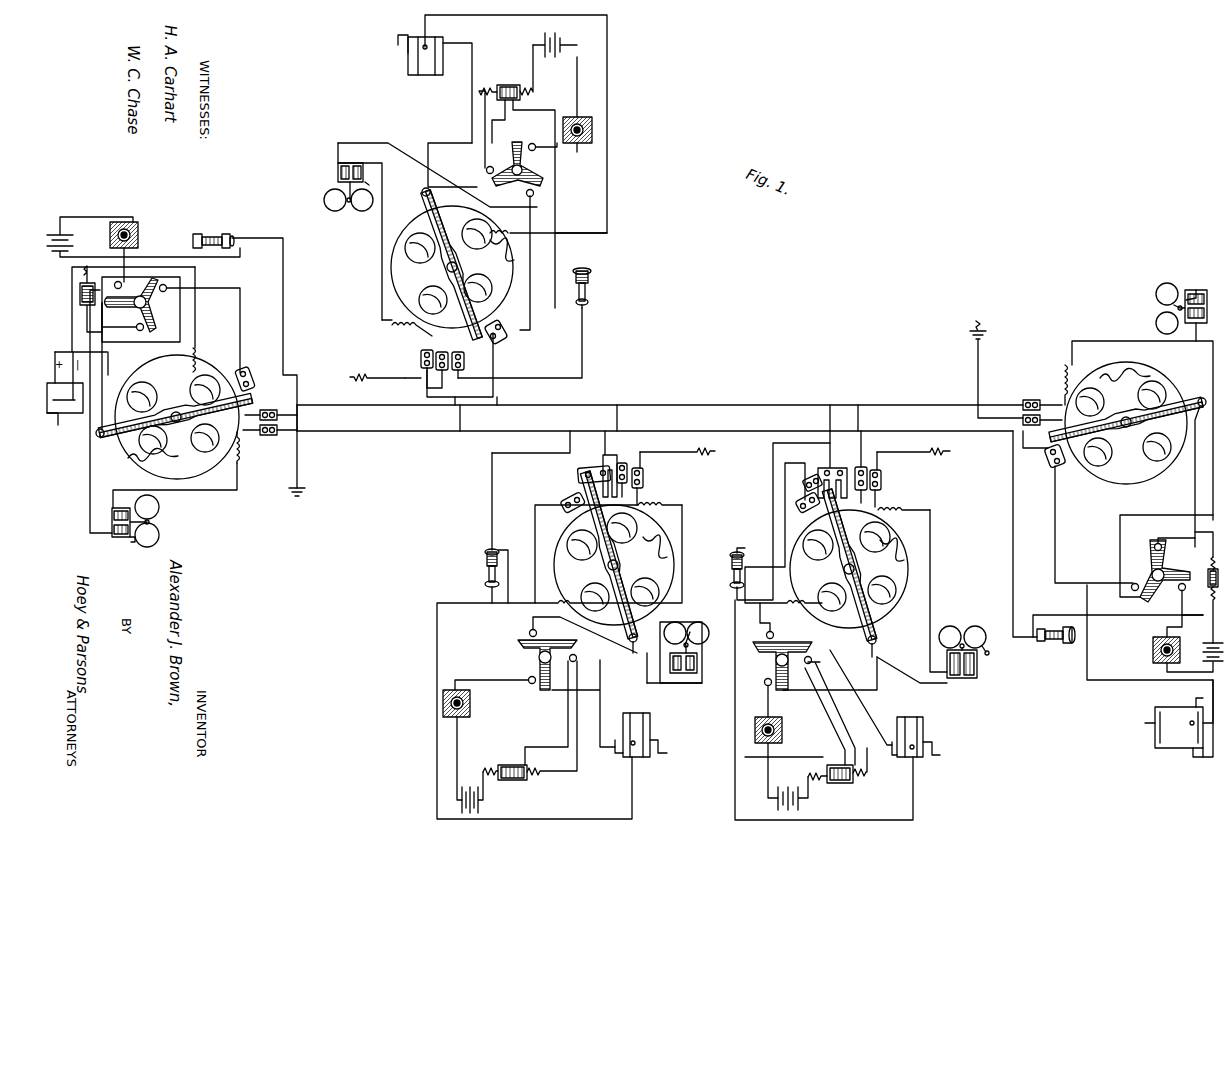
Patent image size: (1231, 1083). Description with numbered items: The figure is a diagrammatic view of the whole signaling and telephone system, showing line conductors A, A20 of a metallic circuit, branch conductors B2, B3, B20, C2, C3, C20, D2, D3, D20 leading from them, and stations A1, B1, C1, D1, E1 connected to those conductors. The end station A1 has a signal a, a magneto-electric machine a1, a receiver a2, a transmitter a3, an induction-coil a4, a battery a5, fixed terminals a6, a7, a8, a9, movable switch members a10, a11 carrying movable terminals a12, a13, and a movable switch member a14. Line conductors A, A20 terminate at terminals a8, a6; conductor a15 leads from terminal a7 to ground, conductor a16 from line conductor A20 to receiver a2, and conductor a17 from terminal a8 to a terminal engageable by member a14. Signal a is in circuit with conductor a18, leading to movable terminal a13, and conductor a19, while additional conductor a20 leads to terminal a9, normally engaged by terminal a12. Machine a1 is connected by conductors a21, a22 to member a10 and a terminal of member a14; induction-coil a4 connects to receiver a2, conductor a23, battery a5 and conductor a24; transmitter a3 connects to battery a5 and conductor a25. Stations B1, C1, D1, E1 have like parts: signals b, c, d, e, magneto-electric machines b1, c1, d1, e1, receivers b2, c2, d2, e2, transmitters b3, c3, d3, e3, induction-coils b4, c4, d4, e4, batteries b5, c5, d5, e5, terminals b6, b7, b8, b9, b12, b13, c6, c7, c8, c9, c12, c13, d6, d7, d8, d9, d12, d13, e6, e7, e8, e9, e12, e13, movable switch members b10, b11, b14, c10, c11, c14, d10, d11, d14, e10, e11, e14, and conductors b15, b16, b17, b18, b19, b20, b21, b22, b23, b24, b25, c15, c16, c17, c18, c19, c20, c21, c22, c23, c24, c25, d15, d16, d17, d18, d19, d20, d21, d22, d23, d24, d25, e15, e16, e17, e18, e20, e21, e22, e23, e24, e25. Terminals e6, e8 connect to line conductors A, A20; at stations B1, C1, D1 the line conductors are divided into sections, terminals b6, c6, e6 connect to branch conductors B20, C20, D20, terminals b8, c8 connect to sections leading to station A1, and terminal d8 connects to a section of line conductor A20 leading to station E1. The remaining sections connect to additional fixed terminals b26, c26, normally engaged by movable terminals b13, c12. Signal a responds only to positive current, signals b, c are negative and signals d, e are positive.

The line conductor A is at (708, 404).
The line conductor A20 is at (529, 418).
The branch conductor B20 is at (473, 418).
The branch conductor C20 is at (630, 418).
The branch conductor D20 is at (873, 418).
The branch conductor D2 is at (838, 418).
The station A1 is at (174, 417).
The signal a is at (159, 519).
The magneto-electric machine a1 is at (76, 413).
The receiver a2 is at (211, 234).
The transmitter a3 is at (134, 252).
The induction-coil a4 is at (79, 298).
The battery a5 is at (143, 237).
The fixed terminal a6 is at (270, 443).
The fixed terminal a7 is at (271, 406).
The fixed terminal a8 is at (249, 370).
The fixed terminal a9 is at (104, 428).
The movable switch member a10 is at (207, 319).
The movable switch member a11 is at (173, 424).
The movable terminal a12 is at (226, 395).
The movable terminal a13 is at (249, 447).
The movable switch member a14 is at (141, 309).
The conductor a15 is at (297, 462).
The conductor a16 is at (286, 320).
The conductor a17 is at (241, 318).
The conductor a18 is at (196, 490).
The conductor a19 is at (90, 476).
The conductor a20 is at (116, 368).
The conductor a21 is at (72, 334).
The conductor a22 is at (113, 366).
The conductor a23 is at (123, 320).
The conductor a24 is at (85, 343).
The conductor a25 is at (141, 281).
The station B1 is at (452, 264).
The branch conductor B2 is at (495, 355).
The branch conductor B3 is at (444, 365).
The signal b is at (353, 231).
The magneto-electric machine b1 is at (426, 75).
The receiver b2 is at (591, 288).
The transmitter b3 is at (580, 114).
The induction-coil b4 is at (508, 83).
The battery b5 is at (555, 35).
The terminal b6 is at (464, 358).
The terminal b7 is at (443, 373).
The terminal b8 is at (503, 324).
The terminal b9 is at (421, 192).
The movable switch member b10 is at (416, 232).
The movable switch member b11 is at (459, 266).
The terminal b12 is at (452, 265).
The movable terminal b13 is at (494, 290).
The movable switch member b14 is at (521, 174).
The conductor b15 is at (378, 365).
The conductor b16 is at (584, 346).
The conductor b17 is at (537, 269).
The conductor b18 is at (382, 238).
The conductor b19 is at (437, 165).
The conductor b20 is at (452, 155).
The conductor b21 is at (608, 90).
The conductor b22 is at (472, 86).
The conductor b23 is at (523, 204).
The conductor b24 is at (506, 106).
The conductor b25 is at (557, 157).
The additional fixed terminal b26 is at (405, 340).
The station C1 is at (607, 554).
The branch conductor C2 is at (570, 440).
The branch conductor C3 is at (598, 464).
The signal c is at (709, 633).
The magneto-electric machine c1 is at (650, 720).
The receiver c2 is at (487, 576).
The transmitter c3 is at (470, 704).
The induction-coil c4 is at (511, 780).
The battery c5 is at (470, 792).
The terminal c6 is at (625, 462).
The terminal c7 is at (644, 474).
The terminal c8 is at (566, 510).
The terminal c9 is at (593, 650).
The movable switch member c10 is at (568, 554).
The movable switch member c11 is at (617, 562).
The movable terminal c12 is at (609, 554).
The terminal c13 is at (660, 495).
The movable switch member c14 is at (533, 664).
The conductor c15 is at (680, 450).
The conductor c16 is at (492, 493).
The conductor c17 is at (535, 534).
The conductor c18 is at (682, 584).
The conductor c19 is at (677, 662).
The conductor c20 is at (590, 703).
The conductor c21 is at (632, 784).
The conductor c22 is at (600, 702).
The conductor c23 is at (542, 747).
The conductor c24 is at (560, 773).
The conductor c25 is at (478, 680).
The additional fixed terminal c26 is at (591, 468).
The station D1 is at (856, 565).
The branch conductor D3 is at (839, 464).
The signal d is at (960, 633).
The magneto-electric machine d1 is at (923, 726).
The receiver d2 is at (728, 568).
The transmitter d3 is at (782, 731).
The induction-coil d4 is at (841, 783).
The battery d5 is at (793, 788).
The terminal d6 is at (868, 467).
The terminal d7 is at (882, 478).
The terminal d8 is at (802, 510).
The terminal d9 is at (883, 646).
The movable switch member d10 is at (893, 531).
The movable switch member d11 is at (853, 566).
The movable terminal d12 is at (849, 565).
The terminal d13 is at (904, 500).
The movable switch member d14 is at (782, 646).
The conductor d15 is at (913, 451).
The conductor d16 is at (773, 501).
The conductor d17 is at (785, 549).
The conductor d18 is at (930, 566).
The conductor d19 is at (893, 675).
The conductor d20 is at (839, 674).
The conductor d21 is at (914, 778).
The conductor d22 is at (861, 697).
The conductor d23 is at (840, 728).
The conductor d24 is at (811, 476).
The conductor d25 is at (770, 707).
The station E1 is at (1125, 423).
The signal e is at (1157, 298).
The magneto-electric machine e1 is at (1171, 718).
The receiver e2 is at (1053, 643).
The transmitter e3 is at (1153, 653).
The induction-coil e4 is at (1200, 600).
The battery e5 is at (1205, 652).
The terminal e6 is at (1035, 398).
The terminal e7 is at (1042, 431).
The terminal e8 is at (1050, 461).
The terminal e9 is at (1199, 461).
The movable switch member e10 is at (1119, 395).
The movable switch member e11 is at (1123, 416).
The terminal e12 is at (1125, 423).
The terminal e13 is at (1077, 379).
The movable switch member e14 is at (1160, 571).
The conductor e15 is at (978, 374).
The conductor e16 is at (1013, 526).
The conductor e17 is at (1055, 514).
The conductor e18 is at (1095, 340).
The conductor e20 is at (1195, 500).
The conductor e21 is at (1113, 680).
The conductor e22 is at (1203, 757).
The conductor e23 is at (1176, 540).
The conductor e24 is at (1171, 535).
The conductor e25 is at (1118, 617).